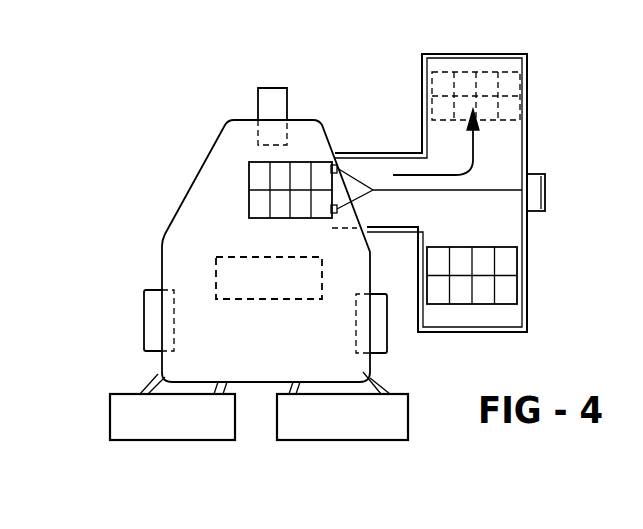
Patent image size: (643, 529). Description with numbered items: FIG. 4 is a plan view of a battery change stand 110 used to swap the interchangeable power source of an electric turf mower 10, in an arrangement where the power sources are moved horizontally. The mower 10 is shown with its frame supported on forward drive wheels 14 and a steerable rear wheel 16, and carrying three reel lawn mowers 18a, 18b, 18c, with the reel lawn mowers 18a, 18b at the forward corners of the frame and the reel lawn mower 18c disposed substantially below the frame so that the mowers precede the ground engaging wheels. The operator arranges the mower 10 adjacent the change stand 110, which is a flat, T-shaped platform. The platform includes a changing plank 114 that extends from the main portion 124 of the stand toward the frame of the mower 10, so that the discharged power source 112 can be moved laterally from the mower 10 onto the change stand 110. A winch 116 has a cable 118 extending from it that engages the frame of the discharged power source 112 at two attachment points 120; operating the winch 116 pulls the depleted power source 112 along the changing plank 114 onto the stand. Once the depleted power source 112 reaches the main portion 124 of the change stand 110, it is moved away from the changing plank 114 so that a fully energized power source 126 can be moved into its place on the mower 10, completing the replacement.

The electric turf mower 10 is at (165, 218).
The forward drive wheels 14 is at (150, 333).
The steerable rear wheel 16 is at (262, 100).
The reel lawn mower 18a is at (342, 417).
The reel lawn mower 18b is at (172, 417).
The reel lawn mower 18c is at (269, 278).
The battery change stand 110 is at (527, 108).
The discharged power source 112 is at (247, 193).
The changing plank 114 is at (390, 152).
The winch 116 is at (545, 204).
The cable 118 is at (423, 192).
The attachment points 120 is at (334, 162).
The main portion of change stand 124 is at (517, 230).
The fully energized power source 126 is at (513, 297).